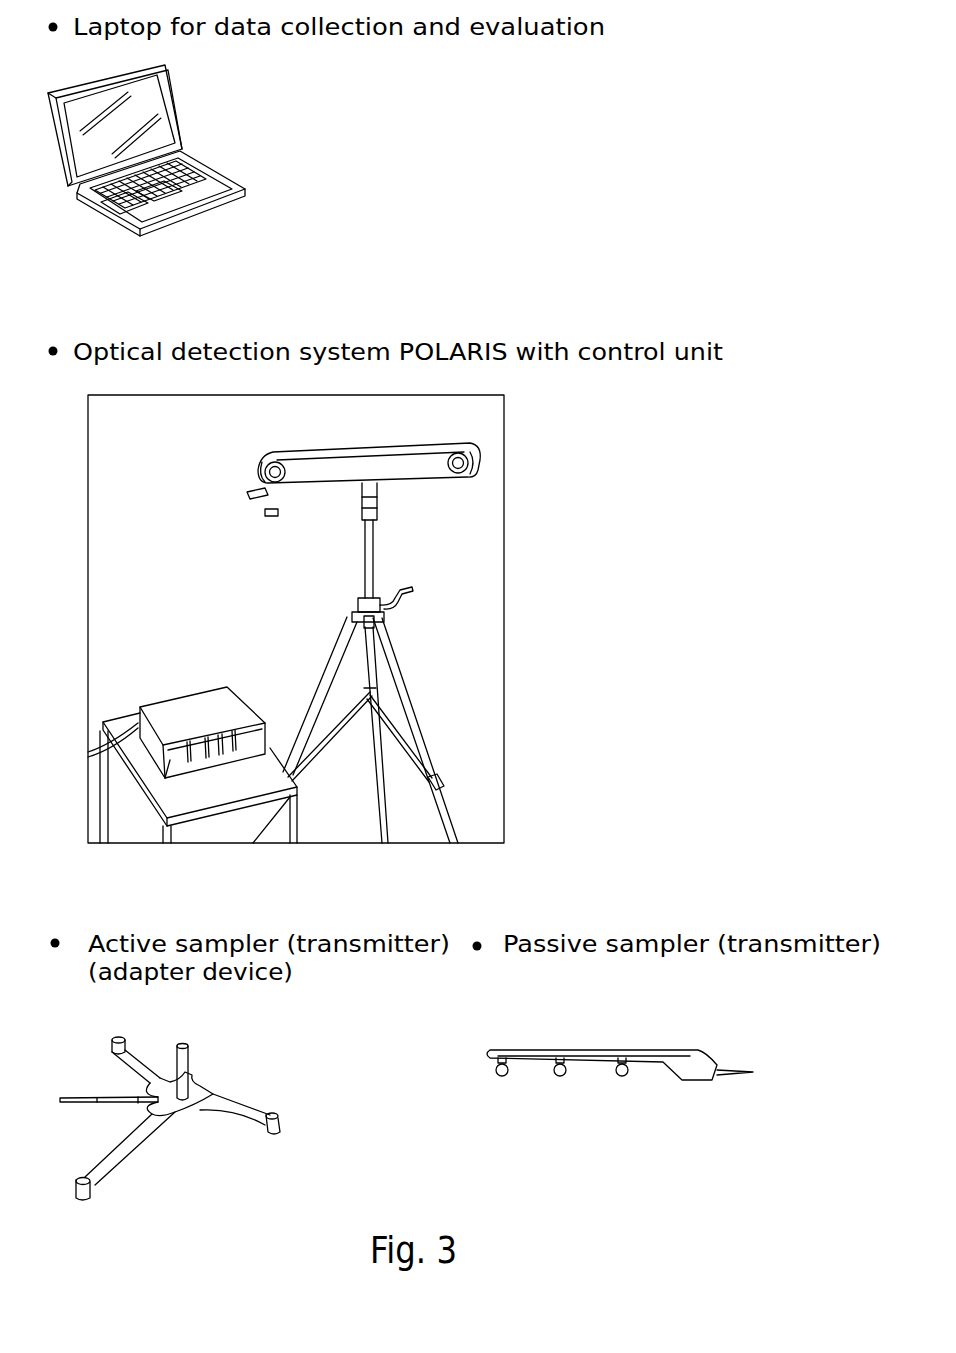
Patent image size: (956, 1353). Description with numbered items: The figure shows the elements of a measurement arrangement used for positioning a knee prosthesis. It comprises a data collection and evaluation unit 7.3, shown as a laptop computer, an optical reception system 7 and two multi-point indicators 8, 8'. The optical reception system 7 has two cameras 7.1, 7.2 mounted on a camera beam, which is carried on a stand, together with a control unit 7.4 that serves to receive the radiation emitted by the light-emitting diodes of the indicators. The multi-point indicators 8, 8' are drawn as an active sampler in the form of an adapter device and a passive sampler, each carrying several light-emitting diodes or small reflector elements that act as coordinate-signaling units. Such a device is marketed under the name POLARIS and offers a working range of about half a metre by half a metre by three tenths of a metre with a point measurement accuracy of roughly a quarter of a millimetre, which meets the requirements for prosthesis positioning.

The optical reception system 7 is at (380, 143).
The camera 7.1 is at (270, 484).
The camera 7.2 is at (452, 479).
The data collection and evaluation unit 7.3 is at (203, 171).
The control unit 7.4 is at (207, 703).
The multi-point indicator 8 is at (203, 1113).
The multi-point indicator 8' is at (620, 1033).